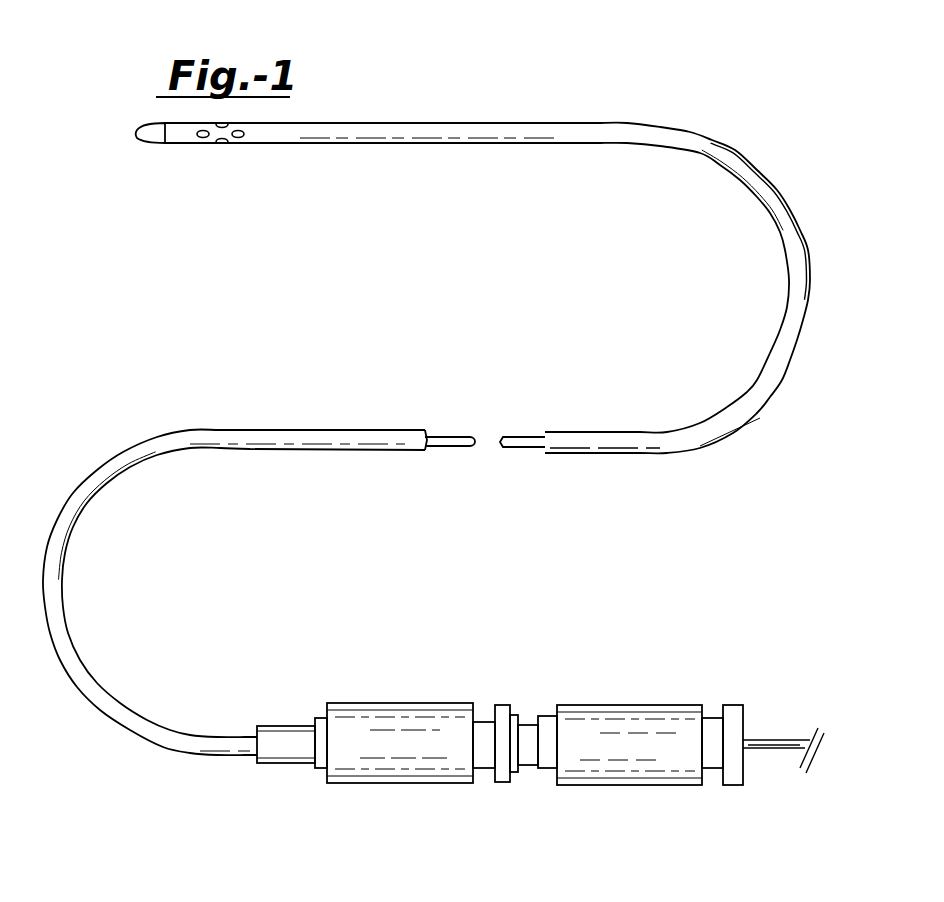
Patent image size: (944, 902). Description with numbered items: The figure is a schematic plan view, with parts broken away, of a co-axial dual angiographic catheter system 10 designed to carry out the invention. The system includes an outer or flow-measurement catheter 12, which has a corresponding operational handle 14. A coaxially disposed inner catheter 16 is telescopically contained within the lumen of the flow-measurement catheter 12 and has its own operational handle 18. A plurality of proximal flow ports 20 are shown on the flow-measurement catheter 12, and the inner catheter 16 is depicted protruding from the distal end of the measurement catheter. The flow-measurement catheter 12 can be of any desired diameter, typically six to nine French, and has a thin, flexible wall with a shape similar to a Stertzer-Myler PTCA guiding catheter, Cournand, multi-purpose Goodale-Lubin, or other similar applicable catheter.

The catheter system 10 is at (725, 133).
The flow-measurement catheter 12 is at (314, 428).
The operational handle 14 is at (418, 703).
The inner catheter 16 is at (444, 434).
The operational handle 18 is at (628, 705).
The proximal flow ports 20 is at (236, 140).